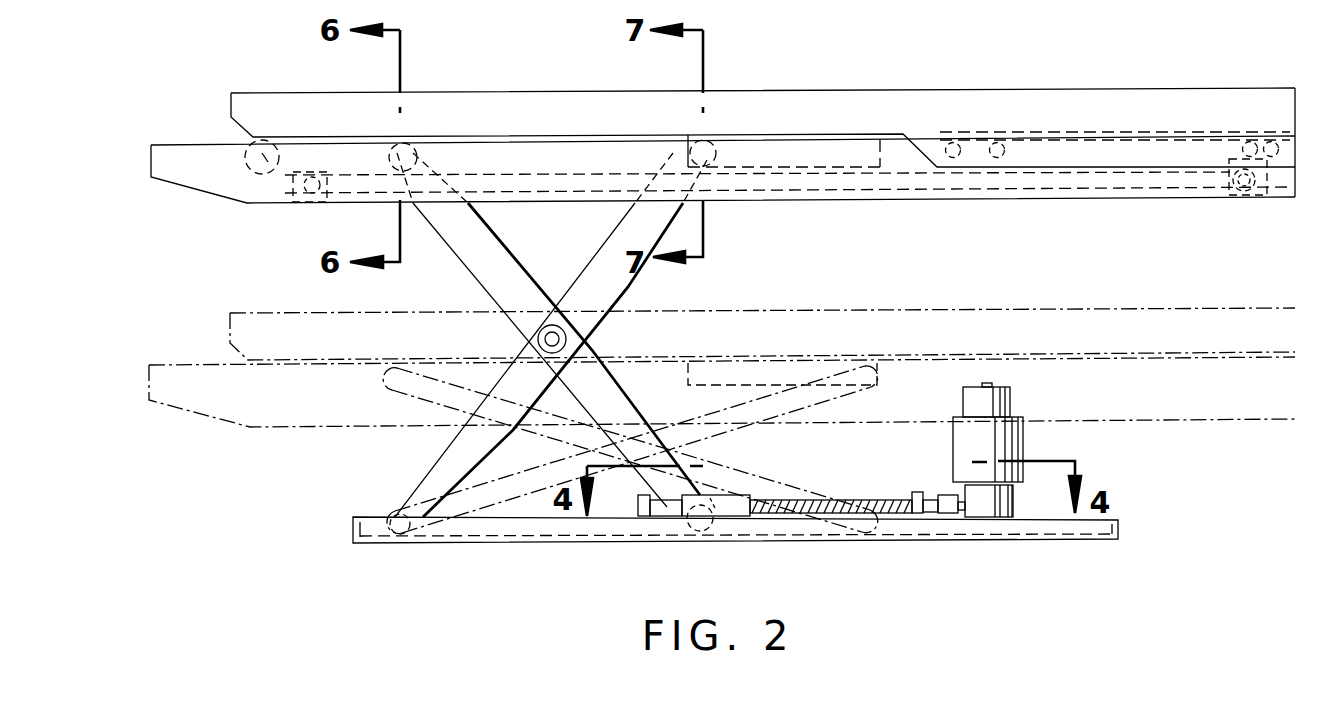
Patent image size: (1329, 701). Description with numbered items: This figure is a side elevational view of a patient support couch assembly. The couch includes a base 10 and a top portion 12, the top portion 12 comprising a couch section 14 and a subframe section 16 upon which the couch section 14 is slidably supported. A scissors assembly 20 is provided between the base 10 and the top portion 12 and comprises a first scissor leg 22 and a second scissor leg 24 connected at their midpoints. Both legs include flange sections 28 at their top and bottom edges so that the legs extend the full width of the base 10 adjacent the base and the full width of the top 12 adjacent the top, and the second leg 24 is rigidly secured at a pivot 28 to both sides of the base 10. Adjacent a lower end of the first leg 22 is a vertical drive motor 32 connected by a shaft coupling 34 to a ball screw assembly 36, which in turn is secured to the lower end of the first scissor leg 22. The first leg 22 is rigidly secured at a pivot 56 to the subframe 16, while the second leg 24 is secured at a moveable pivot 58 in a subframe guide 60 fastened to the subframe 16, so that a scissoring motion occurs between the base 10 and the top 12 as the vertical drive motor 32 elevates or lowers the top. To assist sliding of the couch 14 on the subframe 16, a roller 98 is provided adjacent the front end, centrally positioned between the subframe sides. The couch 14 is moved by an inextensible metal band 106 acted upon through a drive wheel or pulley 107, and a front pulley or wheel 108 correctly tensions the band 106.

The base 10 is at (1106, 549).
The top portion 12 is at (1300, 128).
The couch section 14 is at (252, 84).
The subframe section 16 is at (205, 206).
The scissors assembly 20 is at (650, 287).
The first scissor leg 22 is at (477, 258).
The second scissor leg 24 is at (627, 232).
The flange section / pivot 28 is at (400, 532).
The vertical drive motor 32 is at (1000, 442).
The shaft coupling 34 is at (947, 512).
The ball screw assembly 36 is at (730, 500).
The pivot 56 is at (417, 133).
The moveable pivot 58 is at (723, 140).
The subframe guide 60 is at (827, 153).
The roller 98 is at (253, 145).
The inextensible metal band 106 is at (1113, 190).
The drive wheel or pulley 107 is at (1230, 200).
The front pulley or wheel 108 is at (300, 185).